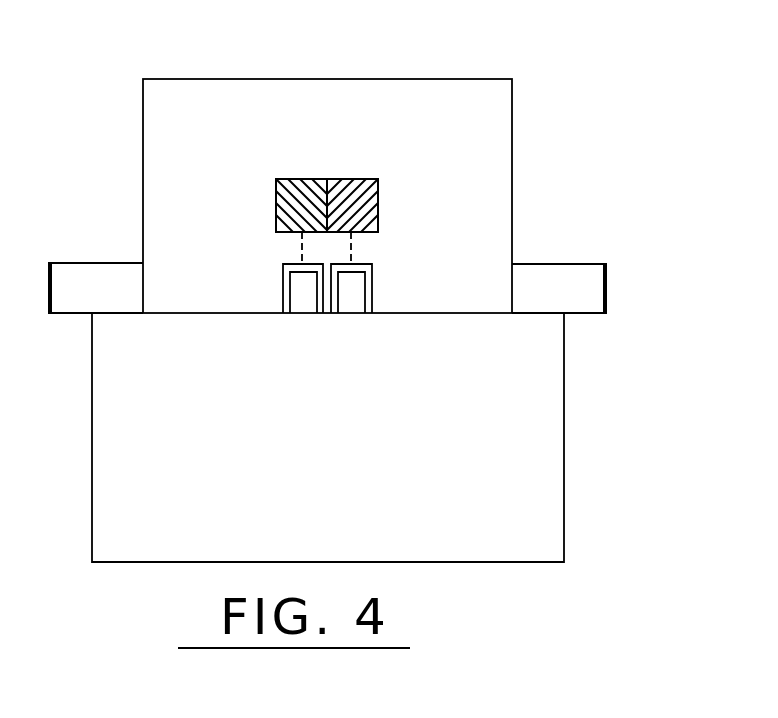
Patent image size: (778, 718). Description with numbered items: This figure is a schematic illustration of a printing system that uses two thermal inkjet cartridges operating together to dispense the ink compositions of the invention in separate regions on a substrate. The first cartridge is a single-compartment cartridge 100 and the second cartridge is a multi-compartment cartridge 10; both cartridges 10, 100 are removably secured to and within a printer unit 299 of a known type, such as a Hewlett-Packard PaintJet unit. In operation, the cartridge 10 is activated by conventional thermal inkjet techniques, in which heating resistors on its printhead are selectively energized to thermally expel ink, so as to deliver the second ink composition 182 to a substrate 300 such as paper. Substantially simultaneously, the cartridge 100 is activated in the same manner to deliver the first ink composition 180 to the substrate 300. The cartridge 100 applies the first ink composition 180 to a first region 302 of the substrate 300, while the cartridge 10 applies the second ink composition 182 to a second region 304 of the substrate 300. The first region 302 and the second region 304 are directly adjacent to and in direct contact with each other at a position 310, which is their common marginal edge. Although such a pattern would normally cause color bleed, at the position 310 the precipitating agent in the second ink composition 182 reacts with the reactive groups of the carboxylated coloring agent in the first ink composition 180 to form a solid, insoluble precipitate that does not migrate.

The substrate 300 is at (497, 168).
The printer unit 299 is at (542, 422).
The position 310 is at (328, 144).
The first region 302 is at (277, 180).
The second region 304 is at (378, 180).
The ink composition 1 180 is at (300, 250).
The ink composition 2 182 is at (351, 248).
The single-compartment cartridge 100 is at (290, 295).
The multi-compartment cartridge 10 is at (365, 293).